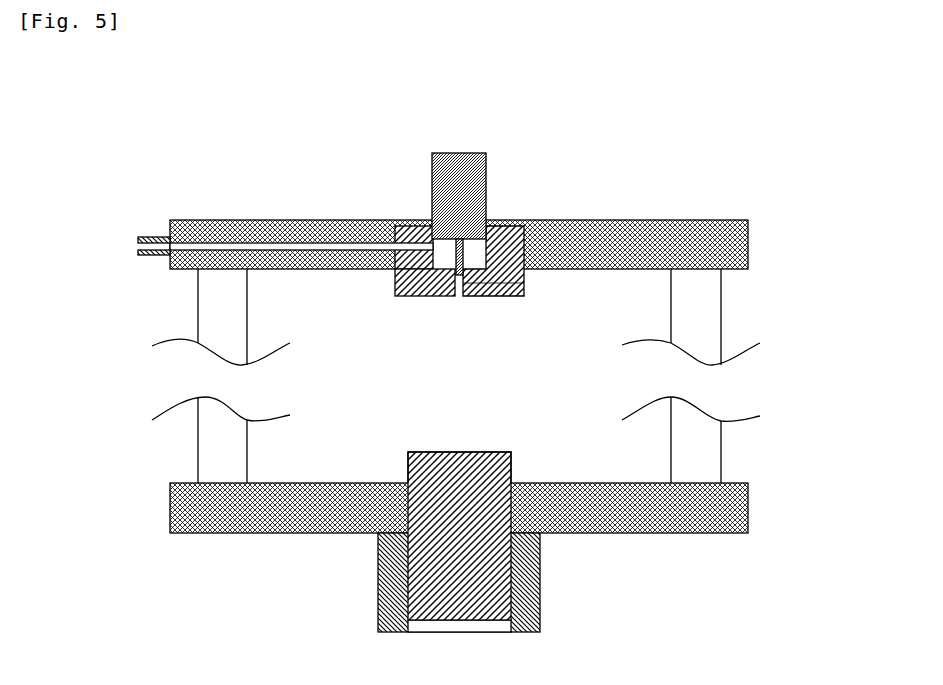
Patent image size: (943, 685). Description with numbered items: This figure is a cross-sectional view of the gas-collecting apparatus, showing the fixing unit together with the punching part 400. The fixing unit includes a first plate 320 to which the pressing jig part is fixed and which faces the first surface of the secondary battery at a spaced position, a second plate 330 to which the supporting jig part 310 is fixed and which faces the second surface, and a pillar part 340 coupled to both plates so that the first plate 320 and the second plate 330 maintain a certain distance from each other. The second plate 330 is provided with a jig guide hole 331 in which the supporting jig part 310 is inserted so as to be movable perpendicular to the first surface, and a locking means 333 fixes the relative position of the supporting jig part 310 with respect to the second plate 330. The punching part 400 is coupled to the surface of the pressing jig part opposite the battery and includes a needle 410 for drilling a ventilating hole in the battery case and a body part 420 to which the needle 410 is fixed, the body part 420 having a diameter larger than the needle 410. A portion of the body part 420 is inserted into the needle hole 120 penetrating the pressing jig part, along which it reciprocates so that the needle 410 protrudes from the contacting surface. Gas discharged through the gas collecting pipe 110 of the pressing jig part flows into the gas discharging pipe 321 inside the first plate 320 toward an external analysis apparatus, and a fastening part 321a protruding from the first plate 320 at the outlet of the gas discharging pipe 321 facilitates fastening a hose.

The gas collecting pipe 110 is at (392, 228).
The needle hole 120 is at (524, 290).
The supporting jig part 310 is at (412, 452).
The first plate 320 is at (655, 220).
The gas discharging pipe 321 is at (230, 243).
The fastening part 321a is at (138, 248).
The second plate 330 is at (645, 533).
The jig guide hole 331 is at (515, 452).
The locking means 333 is at (540, 550).
The pillar part 340 is at (721, 315).
The punching part 400 is at (452, 152).
The needle 410 is at (430, 296).
The body part 420 is at (486, 190).